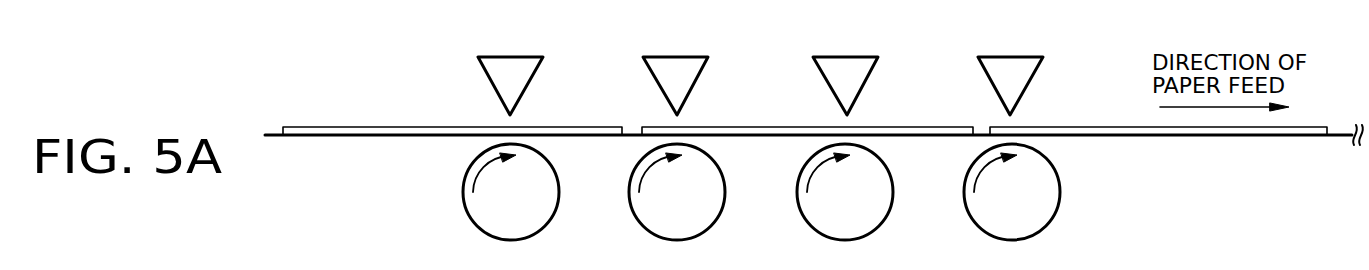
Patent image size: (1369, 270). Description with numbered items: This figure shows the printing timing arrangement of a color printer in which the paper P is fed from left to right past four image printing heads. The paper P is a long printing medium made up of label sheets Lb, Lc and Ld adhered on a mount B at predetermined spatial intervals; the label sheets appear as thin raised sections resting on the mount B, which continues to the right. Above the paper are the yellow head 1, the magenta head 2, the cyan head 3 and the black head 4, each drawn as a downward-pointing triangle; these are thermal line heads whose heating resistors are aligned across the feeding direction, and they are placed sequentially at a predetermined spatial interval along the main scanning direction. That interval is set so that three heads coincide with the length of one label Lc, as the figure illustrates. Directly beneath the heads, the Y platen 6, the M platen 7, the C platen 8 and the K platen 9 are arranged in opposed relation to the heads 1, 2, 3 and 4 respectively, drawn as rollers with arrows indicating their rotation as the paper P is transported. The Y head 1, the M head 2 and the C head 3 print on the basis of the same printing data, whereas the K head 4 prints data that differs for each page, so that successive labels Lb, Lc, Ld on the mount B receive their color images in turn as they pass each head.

The yellow head 1 is at (497, 92).
The magenta head 2 is at (664, 92).
The cyan head 3 is at (834, 92).
The black head 4 is at (997, 92).
The Y platen 6 is at (465, 206).
The M platen 7 is at (631, 206).
The C platen 8 is at (799, 206).
The K platen 9 is at (966, 206).
The label sheet Lb is at (375, 127).
The label sheet Lc is at (900, 127).
The label sheet Ld is at (1093, 127).
The paper P is at (1228, 137).
The mount B is at (1342, 137).